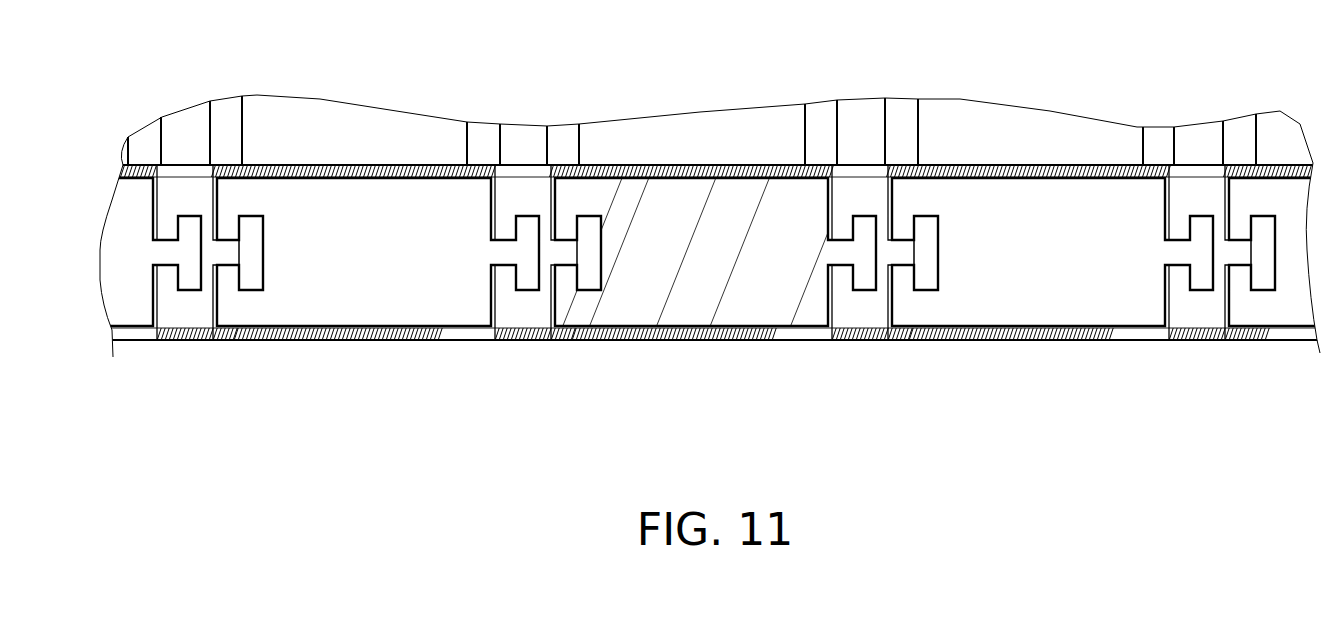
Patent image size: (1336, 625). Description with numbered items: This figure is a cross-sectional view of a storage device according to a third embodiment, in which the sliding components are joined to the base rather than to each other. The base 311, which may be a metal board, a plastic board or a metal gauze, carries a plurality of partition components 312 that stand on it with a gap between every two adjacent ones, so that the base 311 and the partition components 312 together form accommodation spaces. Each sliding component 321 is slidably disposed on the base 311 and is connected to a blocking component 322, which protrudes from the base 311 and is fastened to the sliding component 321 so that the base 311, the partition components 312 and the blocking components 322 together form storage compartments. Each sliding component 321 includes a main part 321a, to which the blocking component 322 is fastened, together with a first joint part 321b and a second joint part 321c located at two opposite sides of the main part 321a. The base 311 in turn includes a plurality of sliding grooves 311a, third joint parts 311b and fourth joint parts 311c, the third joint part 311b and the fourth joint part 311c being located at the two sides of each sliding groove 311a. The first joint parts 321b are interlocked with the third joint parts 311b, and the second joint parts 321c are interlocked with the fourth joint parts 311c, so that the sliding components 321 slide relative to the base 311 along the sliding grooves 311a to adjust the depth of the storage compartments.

The base 311 is at (1287, 340).
The sliding groove 311a is at (256, 333).
The third joint part 311b is at (835, 284).
The fourth joint part 311c is at (583, 256).
The partition component 312 is at (183, 138).
The sliding component 321 is at (369, 270).
The main part 321a is at (732, 310).
The first joint part 321b is at (823, 297).
The second joint part 321c is at (592, 313).
The blocking component 322 is at (385, 142).